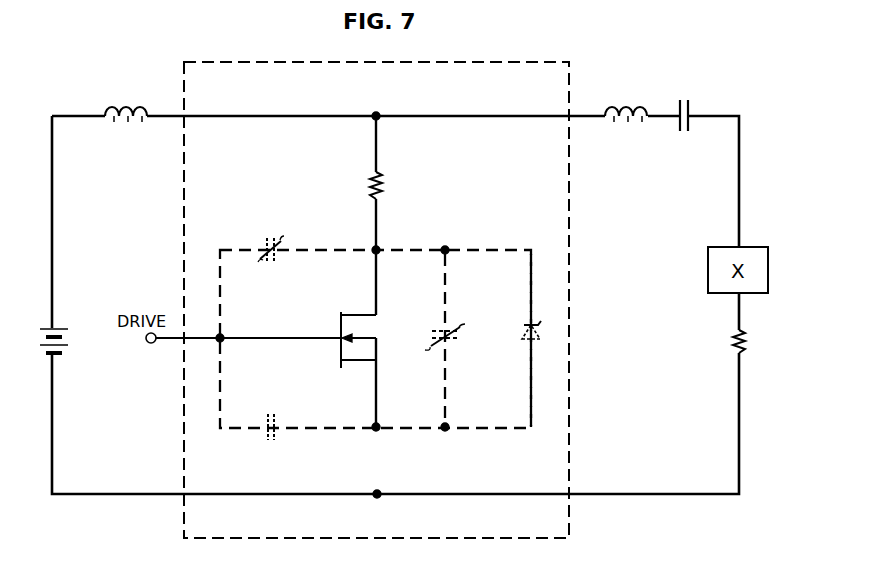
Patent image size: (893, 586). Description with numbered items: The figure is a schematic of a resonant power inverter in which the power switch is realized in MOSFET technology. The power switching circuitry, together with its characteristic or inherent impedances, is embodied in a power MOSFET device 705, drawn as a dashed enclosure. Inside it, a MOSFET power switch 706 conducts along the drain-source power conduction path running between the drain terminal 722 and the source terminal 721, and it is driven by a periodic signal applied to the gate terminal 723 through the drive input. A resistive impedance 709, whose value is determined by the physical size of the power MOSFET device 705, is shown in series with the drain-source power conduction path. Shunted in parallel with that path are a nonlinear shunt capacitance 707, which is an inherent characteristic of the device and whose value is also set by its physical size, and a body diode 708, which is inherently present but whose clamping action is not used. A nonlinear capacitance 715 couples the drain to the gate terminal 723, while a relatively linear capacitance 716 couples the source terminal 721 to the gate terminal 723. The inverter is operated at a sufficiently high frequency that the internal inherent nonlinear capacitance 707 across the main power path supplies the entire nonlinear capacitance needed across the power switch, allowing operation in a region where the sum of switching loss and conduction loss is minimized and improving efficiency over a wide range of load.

The power MOSFET device 705 is at (227, 62).
The MOSFET power switch 706 is at (363, 322).
The nonlinear shunt capacitance 707 is at (430, 340).
The body diode 708 is at (514, 340).
The resistive impedance 709 is at (395, 185).
The nonlinear capacitance 715 is at (272, 236).
The relatively linear capacitance 716 is at (272, 415).
The source terminal 721 is at (381, 506).
The drain terminal 722 is at (374, 104).
The gate terminal 723 is at (224, 336).